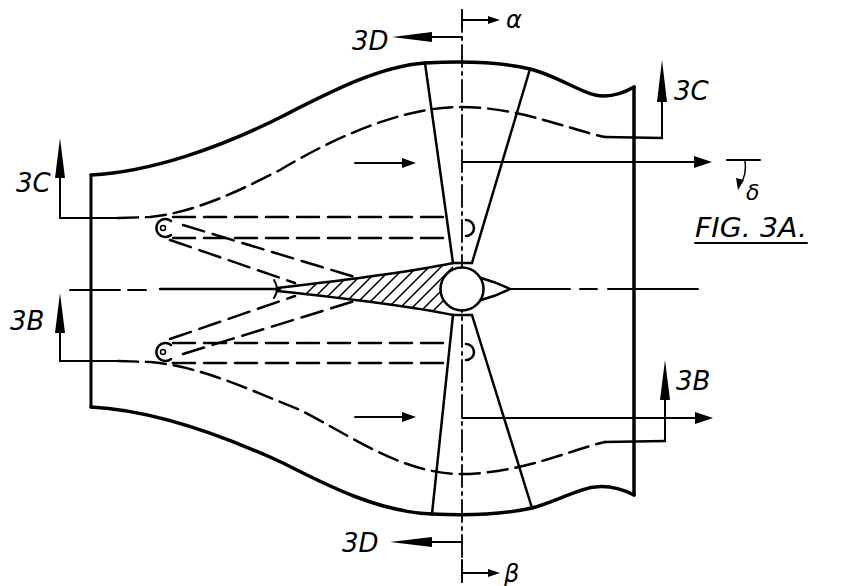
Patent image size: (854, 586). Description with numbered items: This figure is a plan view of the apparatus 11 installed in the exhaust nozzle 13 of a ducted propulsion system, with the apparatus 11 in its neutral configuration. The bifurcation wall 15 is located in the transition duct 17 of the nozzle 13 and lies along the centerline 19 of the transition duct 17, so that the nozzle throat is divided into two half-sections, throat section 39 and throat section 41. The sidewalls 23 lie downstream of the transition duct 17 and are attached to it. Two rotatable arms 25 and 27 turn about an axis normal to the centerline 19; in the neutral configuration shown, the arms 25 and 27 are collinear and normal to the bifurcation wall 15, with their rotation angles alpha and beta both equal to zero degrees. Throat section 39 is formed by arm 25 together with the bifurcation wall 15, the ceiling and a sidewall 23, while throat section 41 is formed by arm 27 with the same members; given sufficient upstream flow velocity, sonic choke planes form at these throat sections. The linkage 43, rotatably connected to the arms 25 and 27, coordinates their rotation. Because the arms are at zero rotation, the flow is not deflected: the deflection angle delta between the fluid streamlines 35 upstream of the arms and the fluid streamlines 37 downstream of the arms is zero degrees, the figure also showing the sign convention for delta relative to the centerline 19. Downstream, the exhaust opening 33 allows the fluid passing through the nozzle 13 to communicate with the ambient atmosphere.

The apparatus 11 is at (273, 100).
The exhaust nozzle 13 is at (130, 166).
The bifurcation wall 15 is at (397, 306).
The transition duct 17 is at (146, 414).
The centerline 19 is at (80, 288).
The sidewalls 23 is at (512, 70).
The arm 25 is at (513, 93).
The arm 27 is at (493, 506).
The exhaust opening 33 is at (634, 462).
The fluid streamlines 35 is at (380, 165).
The fluid streamlines 37 is at (660, 166).
The throat section 39 is at (462, 125).
The throat section 41 is at (462, 428).
The linkage 43 is at (204, 332).